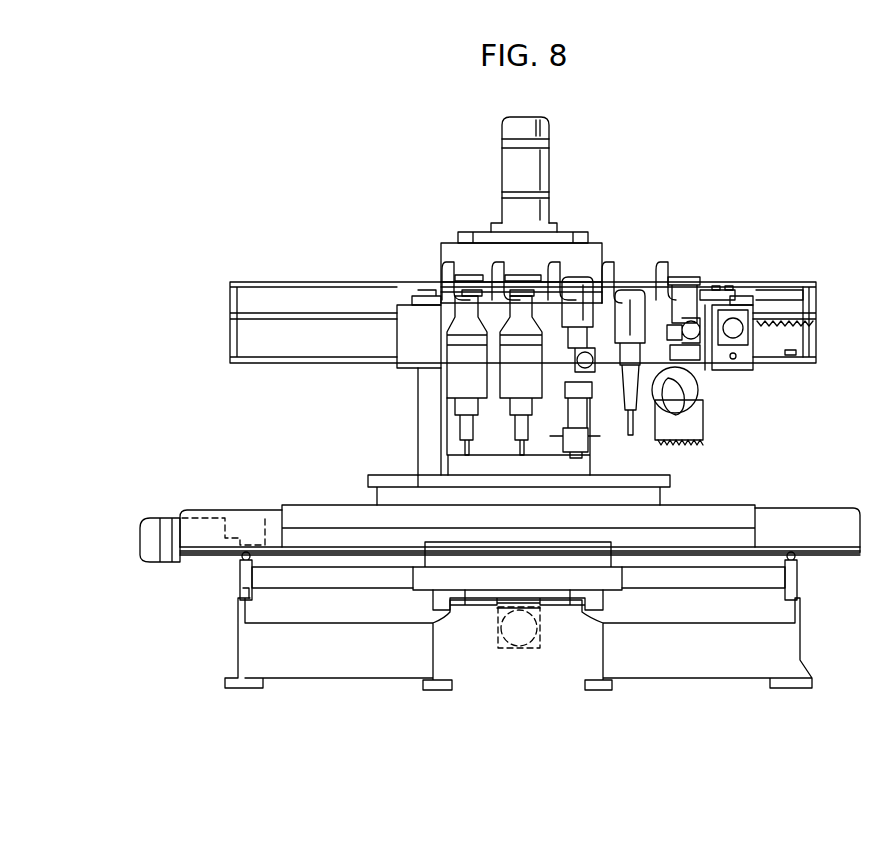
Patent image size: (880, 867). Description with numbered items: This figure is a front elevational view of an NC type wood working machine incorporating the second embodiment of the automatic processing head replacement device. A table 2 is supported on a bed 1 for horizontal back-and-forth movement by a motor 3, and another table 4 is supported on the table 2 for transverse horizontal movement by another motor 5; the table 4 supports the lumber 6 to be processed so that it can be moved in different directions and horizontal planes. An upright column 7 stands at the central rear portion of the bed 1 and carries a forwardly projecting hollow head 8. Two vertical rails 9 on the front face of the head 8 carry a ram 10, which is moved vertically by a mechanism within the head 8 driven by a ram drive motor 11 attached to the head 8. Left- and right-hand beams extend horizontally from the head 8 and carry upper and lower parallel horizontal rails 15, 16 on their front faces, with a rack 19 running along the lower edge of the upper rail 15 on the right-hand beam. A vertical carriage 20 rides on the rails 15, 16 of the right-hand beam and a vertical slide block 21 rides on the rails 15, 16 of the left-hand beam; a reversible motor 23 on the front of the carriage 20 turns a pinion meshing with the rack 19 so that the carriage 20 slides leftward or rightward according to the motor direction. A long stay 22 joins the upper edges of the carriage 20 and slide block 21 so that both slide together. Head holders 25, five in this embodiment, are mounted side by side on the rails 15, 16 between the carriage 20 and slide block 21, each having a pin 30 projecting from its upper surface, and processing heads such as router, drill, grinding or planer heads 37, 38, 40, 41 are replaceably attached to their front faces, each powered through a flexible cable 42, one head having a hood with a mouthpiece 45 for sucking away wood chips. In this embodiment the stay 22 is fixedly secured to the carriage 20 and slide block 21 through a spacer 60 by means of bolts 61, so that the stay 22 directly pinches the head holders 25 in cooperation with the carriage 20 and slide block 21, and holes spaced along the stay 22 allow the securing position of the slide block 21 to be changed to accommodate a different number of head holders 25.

The bed 1 is at (668, 660).
The table 2 is at (483, 578).
The motor 3 is at (525, 640).
The table 4 is at (722, 515).
The motor 5 is at (152, 530).
The lumber 6 is at (375, 480).
The upright column 7 is at (416, 432).
The head 8 is at (553, 228).
The vertical rails 9 is at (492, 266).
The ram 10 is at (525, 250).
The ram drive motor 11 is at (510, 170).
The upper rail 15 is at (797, 313).
The lower rail 16 is at (803, 363).
The rack 19 is at (800, 327).
The carriage 20 is at (745, 358).
The slide block 21 is at (412, 335).
The stay 22 is at (706, 296).
The reversible motor 23 is at (787, 313).
The head holder 25 is at (650, 380).
The pin 30 is at (577, 285).
The processing head 37 is at (455, 380).
The processing head 38 is at (530, 375).
The processing head 40 is at (620, 297).
The processing head 41 is at (680, 290).
The flexible cable 42 is at (458, 292).
The mouthpiece 45 is at (538, 280).
The spacer 60 is at (412, 300).
The bolts 61 is at (716, 288).